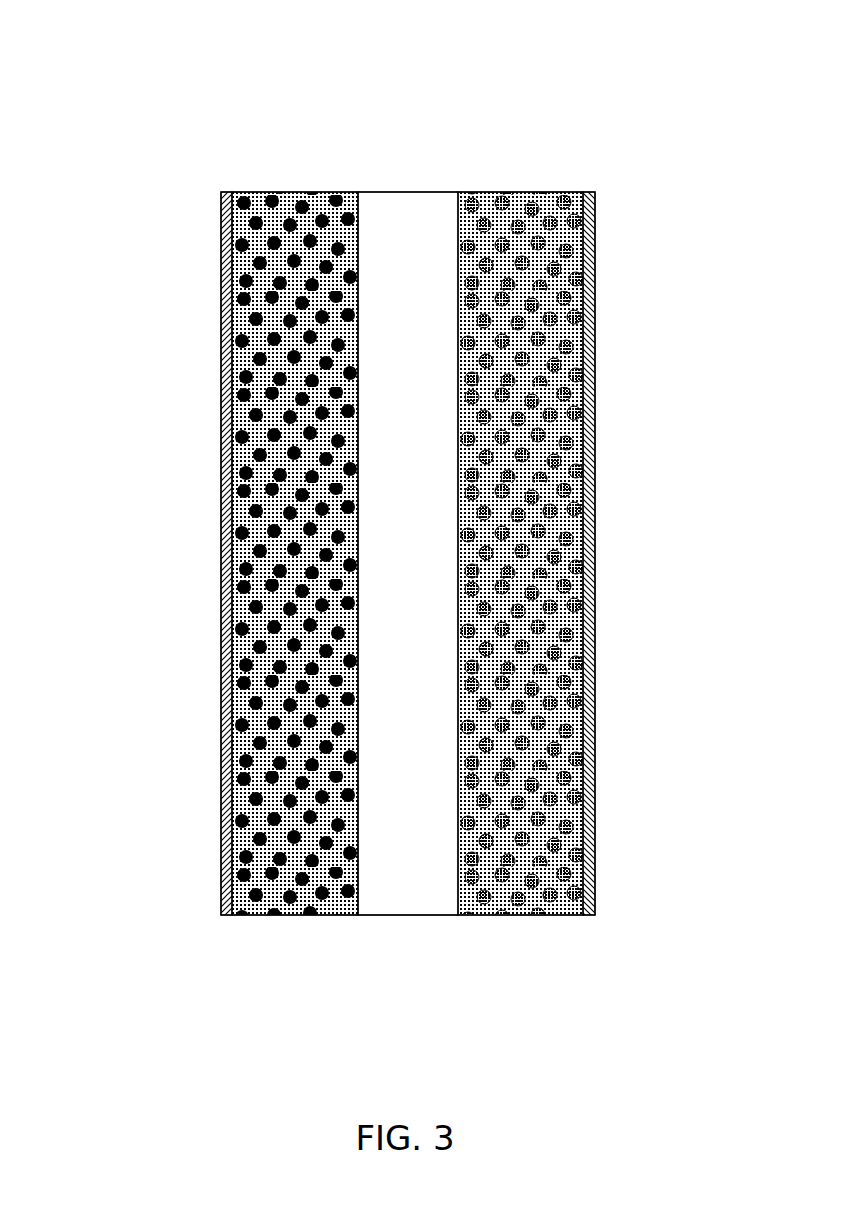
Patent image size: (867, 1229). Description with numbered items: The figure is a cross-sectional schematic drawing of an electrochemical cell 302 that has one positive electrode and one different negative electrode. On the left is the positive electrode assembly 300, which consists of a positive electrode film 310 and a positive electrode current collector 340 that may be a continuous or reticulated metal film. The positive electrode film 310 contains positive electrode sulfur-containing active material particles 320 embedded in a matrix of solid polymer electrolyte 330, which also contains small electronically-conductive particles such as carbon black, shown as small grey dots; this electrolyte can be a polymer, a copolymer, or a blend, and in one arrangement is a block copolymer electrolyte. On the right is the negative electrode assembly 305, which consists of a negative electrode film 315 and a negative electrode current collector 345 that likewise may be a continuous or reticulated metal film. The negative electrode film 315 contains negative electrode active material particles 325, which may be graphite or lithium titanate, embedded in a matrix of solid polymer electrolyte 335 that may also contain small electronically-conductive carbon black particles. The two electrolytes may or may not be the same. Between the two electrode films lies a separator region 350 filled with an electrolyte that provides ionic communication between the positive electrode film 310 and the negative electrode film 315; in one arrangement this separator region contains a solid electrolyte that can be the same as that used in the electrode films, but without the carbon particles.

The electrochemical cell 302 is at (188, 108).
The positive electrode assembly 300 is at (357, 188).
The negative electrode assembly 305 is at (595, 188).
The positive electrode film 310 is at (358, 917).
The negative electrode film 315 is at (583, 917).
The positive electrode sulfur-containing active material particles 320 is at (237, 265).
The negative electrode active material particles 325 is at (584, 212).
The solid polymer electrolyte 330 is at (258, 468).
The solid polymer electrolyte 335 is at (595, 387).
The positive electrode current collector 340 is at (222, 718).
The negative electrode current collector 345 is at (595, 770).
The separator region 350 is at (388, 205).